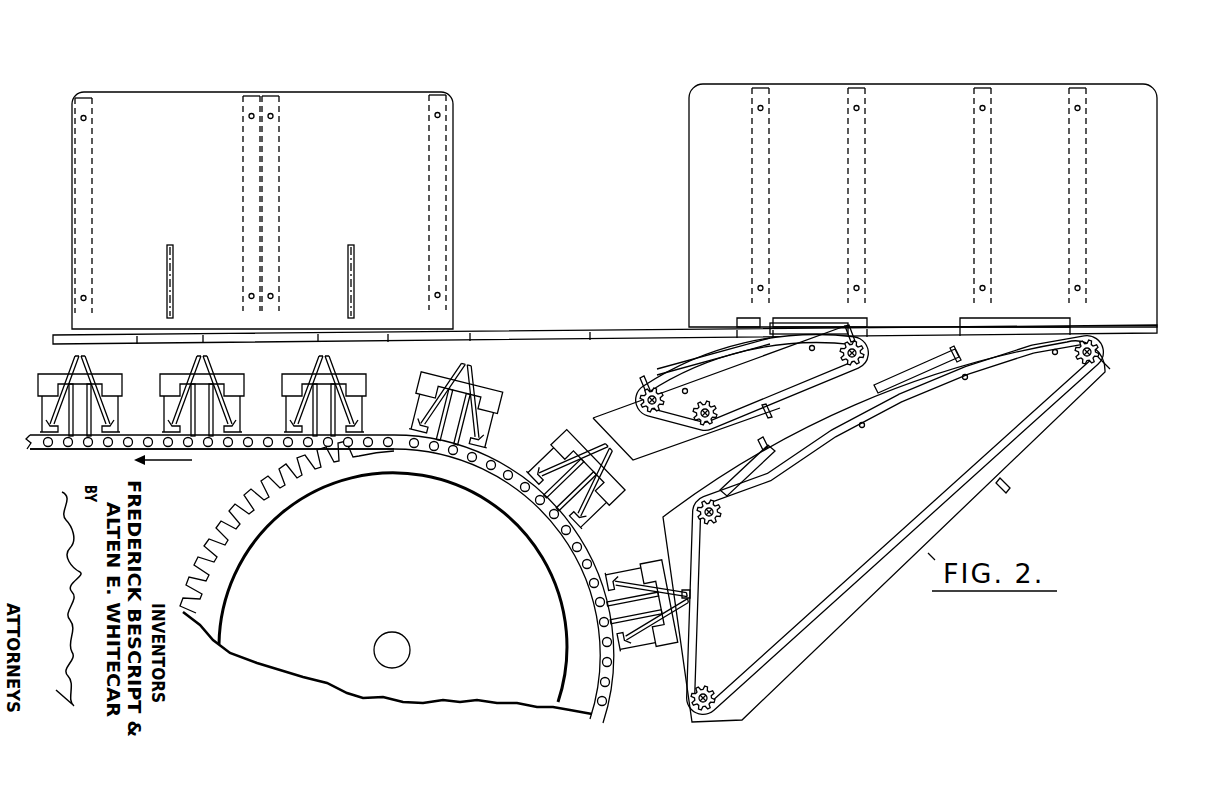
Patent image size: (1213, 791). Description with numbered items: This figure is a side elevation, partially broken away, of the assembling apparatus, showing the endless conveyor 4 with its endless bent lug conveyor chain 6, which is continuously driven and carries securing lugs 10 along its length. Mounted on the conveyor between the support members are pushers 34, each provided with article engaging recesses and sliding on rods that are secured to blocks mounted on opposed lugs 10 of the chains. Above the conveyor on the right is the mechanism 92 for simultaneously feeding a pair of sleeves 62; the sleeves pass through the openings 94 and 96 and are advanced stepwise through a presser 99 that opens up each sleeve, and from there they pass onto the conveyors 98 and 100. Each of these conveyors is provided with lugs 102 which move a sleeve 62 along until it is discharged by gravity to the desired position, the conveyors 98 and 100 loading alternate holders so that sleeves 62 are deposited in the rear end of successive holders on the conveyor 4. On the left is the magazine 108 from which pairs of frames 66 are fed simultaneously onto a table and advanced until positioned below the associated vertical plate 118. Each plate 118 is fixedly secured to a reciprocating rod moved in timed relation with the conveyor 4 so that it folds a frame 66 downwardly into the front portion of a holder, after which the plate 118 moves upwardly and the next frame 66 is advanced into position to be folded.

The endless conveyor 4 is at (626, 670).
The bent lug conveyor chain 6 is at (65, 450).
The securing lug 10 is at (258, 450).
The pusher 34 is at (470, 383).
The sleeve 62 is at (850, 330).
The frame 66 is at (268, 370).
The sleeve feeding mechanism 92 is at (1030, 58).
The opening 94 is at (800, 327).
The opening 96 is at (1028, 327).
The conveyor 98 is at (618, 376).
The presser 99 is at (745, 325).
The conveyor 100 is at (1122, 353).
The lug 102 is at (672, 345).
The magazine 108 is at (300, 72).
The vertical plate 118 is at (173, 292).